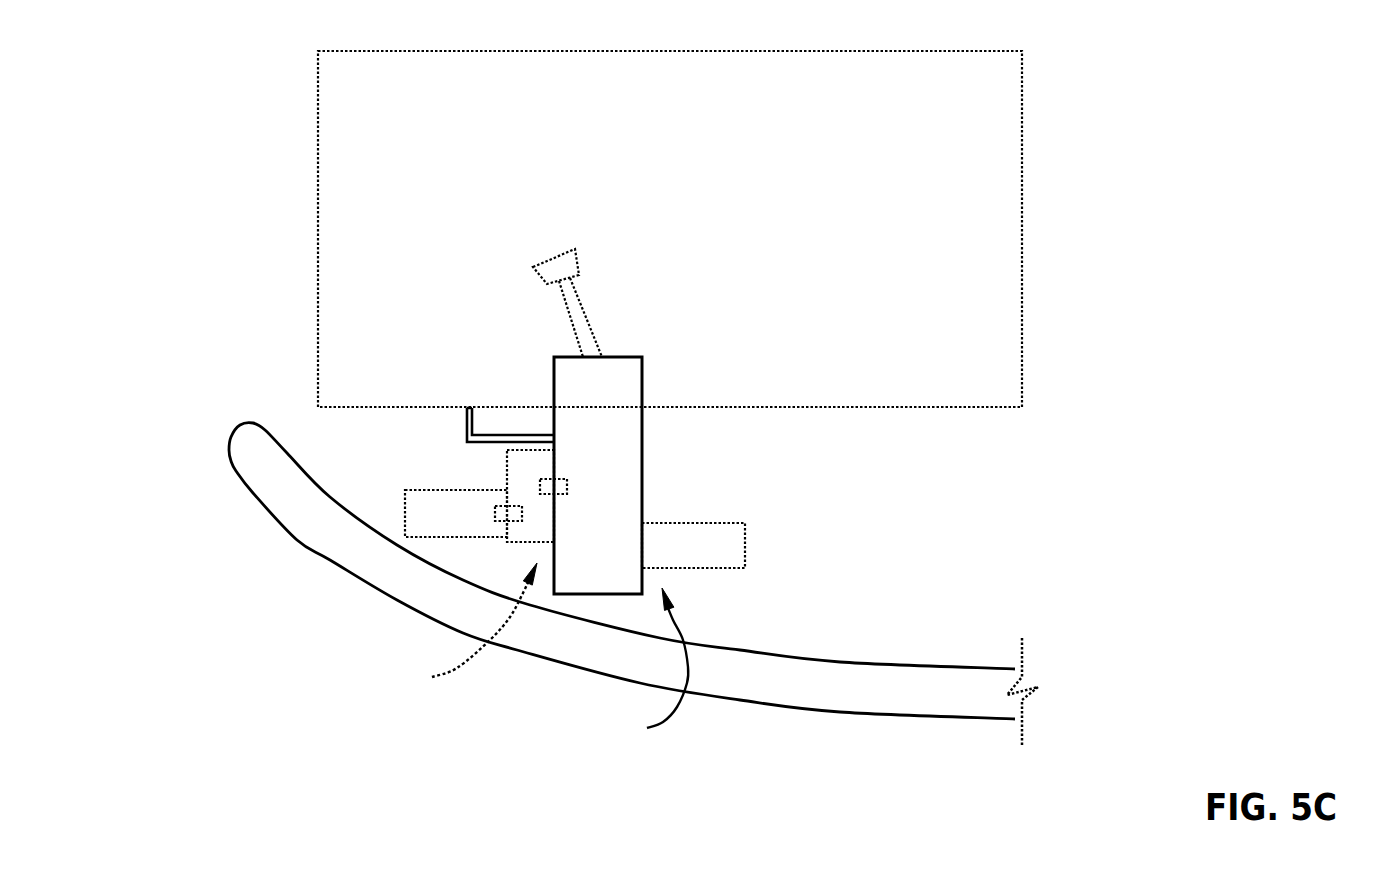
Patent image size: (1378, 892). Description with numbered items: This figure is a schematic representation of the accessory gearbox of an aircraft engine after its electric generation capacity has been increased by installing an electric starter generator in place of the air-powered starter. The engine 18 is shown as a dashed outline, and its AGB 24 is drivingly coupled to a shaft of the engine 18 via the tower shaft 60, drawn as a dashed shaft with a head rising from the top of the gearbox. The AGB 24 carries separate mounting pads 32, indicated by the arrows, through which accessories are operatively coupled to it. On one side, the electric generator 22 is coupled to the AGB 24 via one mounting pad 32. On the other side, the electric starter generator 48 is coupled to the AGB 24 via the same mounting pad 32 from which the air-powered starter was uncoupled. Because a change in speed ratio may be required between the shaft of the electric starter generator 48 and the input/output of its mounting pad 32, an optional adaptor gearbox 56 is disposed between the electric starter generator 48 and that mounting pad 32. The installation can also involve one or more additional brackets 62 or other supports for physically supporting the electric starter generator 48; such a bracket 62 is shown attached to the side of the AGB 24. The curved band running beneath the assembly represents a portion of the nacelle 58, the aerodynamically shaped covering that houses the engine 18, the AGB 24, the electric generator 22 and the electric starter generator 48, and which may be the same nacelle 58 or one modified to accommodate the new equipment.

The engine 18 is at (380, 105).
The electric generator 22 is at (727, 543).
The accessory gearbox 24 is at (566, 423).
The mounting pad 32 is at (537, 654).
The electric starter generator 48 is at (420, 515).
The adaptor gearbox 56 is at (500, 477).
The nacelle 58 is at (312, 525).
The tower shaft 60 is at (572, 307).
The bracket 62 is at (463, 430).